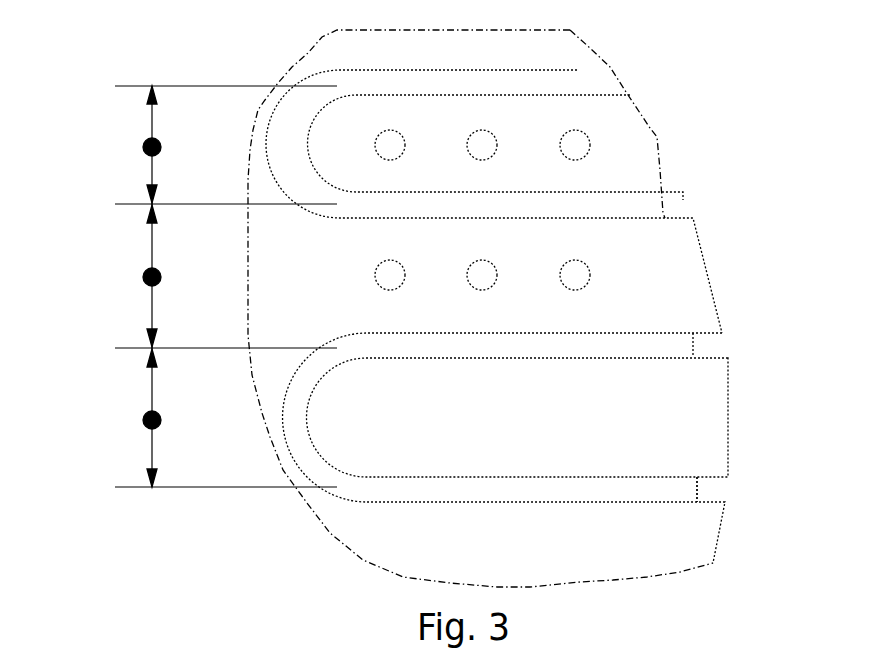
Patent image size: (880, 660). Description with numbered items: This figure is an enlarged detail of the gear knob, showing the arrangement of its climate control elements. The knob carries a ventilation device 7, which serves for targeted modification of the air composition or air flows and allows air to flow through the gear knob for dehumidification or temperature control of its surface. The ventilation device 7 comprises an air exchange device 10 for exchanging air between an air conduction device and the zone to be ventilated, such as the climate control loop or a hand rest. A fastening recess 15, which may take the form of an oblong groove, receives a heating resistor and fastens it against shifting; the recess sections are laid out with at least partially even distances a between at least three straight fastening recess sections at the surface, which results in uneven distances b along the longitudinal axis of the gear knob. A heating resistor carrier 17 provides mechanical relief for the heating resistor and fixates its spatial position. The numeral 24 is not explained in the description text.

The ventilation device 7 is at (564, 159).
The openings 24 is at (410, 131).
The air exchange device 10 is at (655, 118).
The fastening recess 15 is at (720, 489).
The heating resistor carrier 17 is at (652, 545).
The distances between fastening recess sections at the surface a is at (665, 150).
The distances along the longitudinal axis b is at (152, 147).